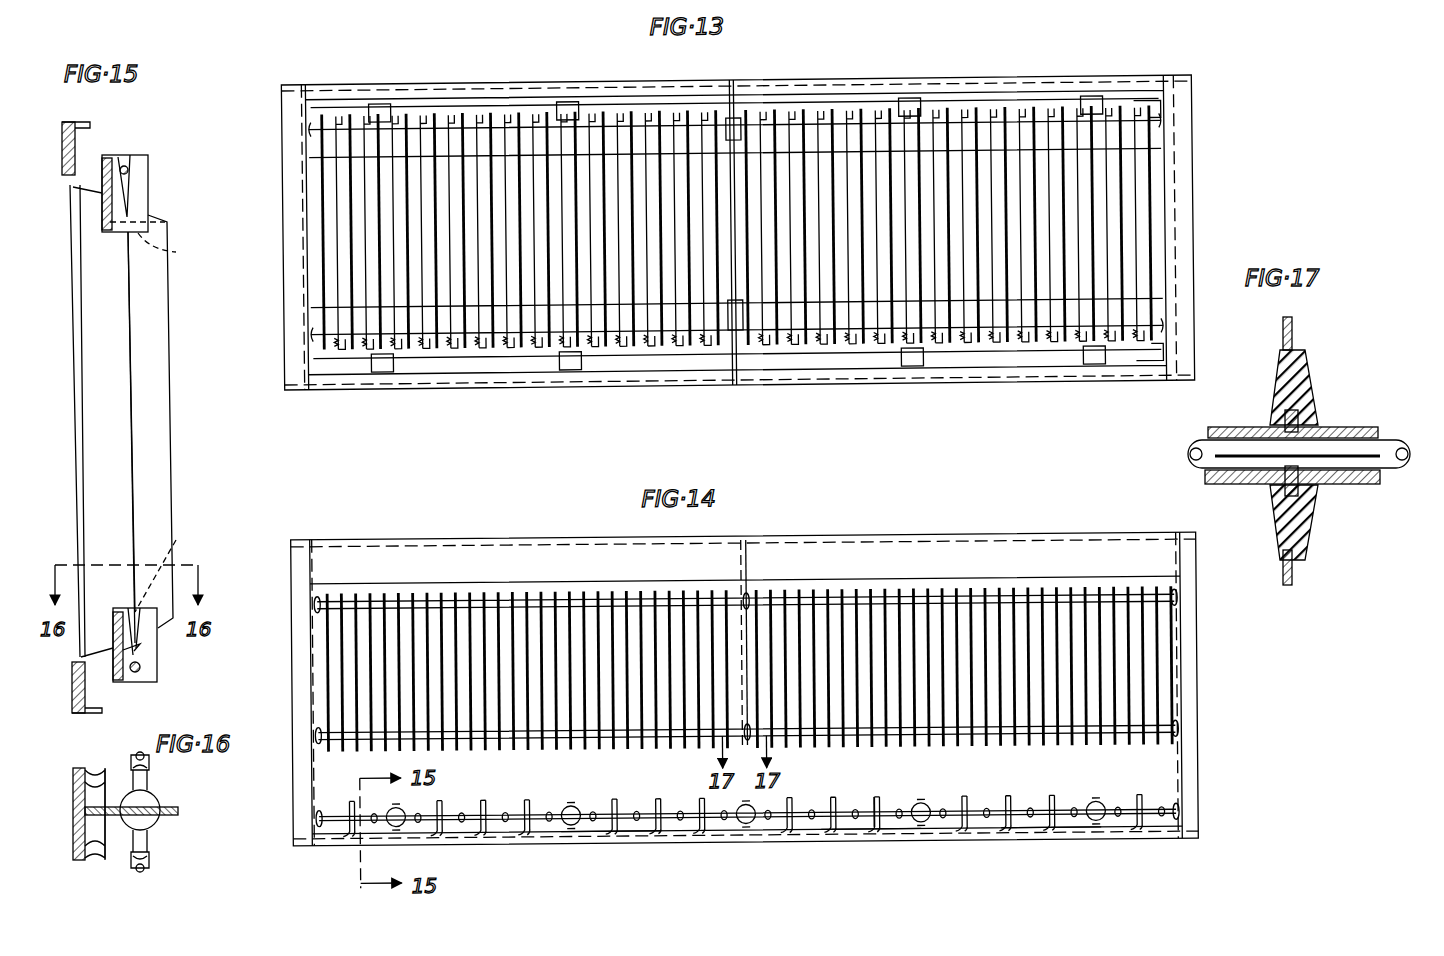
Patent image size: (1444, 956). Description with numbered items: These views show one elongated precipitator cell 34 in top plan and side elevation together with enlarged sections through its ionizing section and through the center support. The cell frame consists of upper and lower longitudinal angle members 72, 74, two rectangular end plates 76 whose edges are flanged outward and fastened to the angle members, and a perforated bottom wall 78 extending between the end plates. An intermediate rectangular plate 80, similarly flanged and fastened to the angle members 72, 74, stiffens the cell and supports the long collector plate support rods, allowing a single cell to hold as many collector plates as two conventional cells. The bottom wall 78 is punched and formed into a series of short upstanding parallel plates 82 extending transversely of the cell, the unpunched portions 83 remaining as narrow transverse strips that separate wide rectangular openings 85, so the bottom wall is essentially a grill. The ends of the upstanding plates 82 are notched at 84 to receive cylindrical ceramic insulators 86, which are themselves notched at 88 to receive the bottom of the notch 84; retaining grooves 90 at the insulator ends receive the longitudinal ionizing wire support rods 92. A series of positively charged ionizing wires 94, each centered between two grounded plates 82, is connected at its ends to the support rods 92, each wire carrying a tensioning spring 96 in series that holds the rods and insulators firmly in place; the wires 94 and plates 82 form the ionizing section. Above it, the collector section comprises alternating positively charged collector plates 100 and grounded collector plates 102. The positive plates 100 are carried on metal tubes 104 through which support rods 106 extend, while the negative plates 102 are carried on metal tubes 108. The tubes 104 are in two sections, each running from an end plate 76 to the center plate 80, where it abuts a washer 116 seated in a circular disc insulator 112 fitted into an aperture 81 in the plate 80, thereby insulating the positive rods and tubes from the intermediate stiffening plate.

In FIG. 13, the precipitator cell 34 is at (1002, 76).
In FIG. 14, the precipitator cell 34 is at (996, 531).
In FIG. 13, the upper longitudinal angle member 72 is at (576, 84).
In FIG. 14, the upper longitudinal angle member 72 is at (490, 539).
In FIG. 14, the lower longitudinal angle member 74 is at (876, 834).
In FIG. 15, the lower longitudinal angle member 74 is at (64, 121).
In FIG. 14, the end plate 76 is at (316, 606).
In FIG. 14, the perforated bottom wall 78 is at (740, 833).
In FIG. 16, the perforated bottom wall 78 is at (113, 820).
In FIG. 13, the intermediate rectangular plate 80 is at (733, 382).
In FIG. 14, the intermediate rectangular plate 80 is at (751, 546).
In FIG. 17, the intermediate rectangular plate 80 is at (1285, 566).
In FIG. 17, the aperture 81 is at (1286, 350).
In FIG. 14, the upstanding plate 82 is at (529, 800).
In FIG. 15, the upstanding plate 82 is at (163, 345).
In FIG. 16, the upstanding plate 82 is at (179, 810).
In FIG. 14, the unpunched portion 83 is at (1056, 834).
In FIG. 15, the unpunched portion 83 is at (82, 262).
In FIG. 16, the unpunched portion 83 is at (100, 832).
In FIG. 15, the notch 84 is at (172, 546).
In FIG. 14, the rectangular opening 85 is at (612, 840).
In FIG. 16, the rectangular opening 85 is at (104, 782).
In FIG. 14, the cylindrical ceramic insulator 86 is at (586, 790).
In FIG. 15, the cylindrical ceramic insulator 86 is at (149, 195).
In FIG. 16, the notch 88 is at (152, 826).
In FIG. 15, the retaining groove 90 is at (134, 673).
In FIG. 13, the ionizing wire support rod 92 is at (1140, 108).
In FIG. 14, the ionizing wire support rod 92 is at (875, 803).
In FIG. 15, the ionizing wire support rod 92 is at (124, 165).
In FIG. 16, the ionizing wire support rod 92 is at (149, 858).
In FIG. 13, the ionizing wire 94 is at (460, 352).
In FIG. 14, the ionizing wire 94 is at (678, 808).
In FIG. 15, the ionizing wire 94 is at (131, 480).
In FIG. 15, the tensioning spring 96 is at (158, 649).
In FIG. 14, the positively charged collector plate 100 is at (1150, 598).
In FIG. 14, the negatively charged collector plate 102 is at (1085, 598).
In FIG. 13, the metal tube 104 is at (1160, 126).
In FIG. 17, the metal tube 104 is at (1346, 428).
In FIG. 17, the support rod 106 is at (1406, 470).
In FIG. 13, the metal tube 108 is at (1160, 154).
In FIG. 17, the circular disc insulator 112 is at (1306, 366).
In FIG. 17, the washer 116 is at (1300, 418).